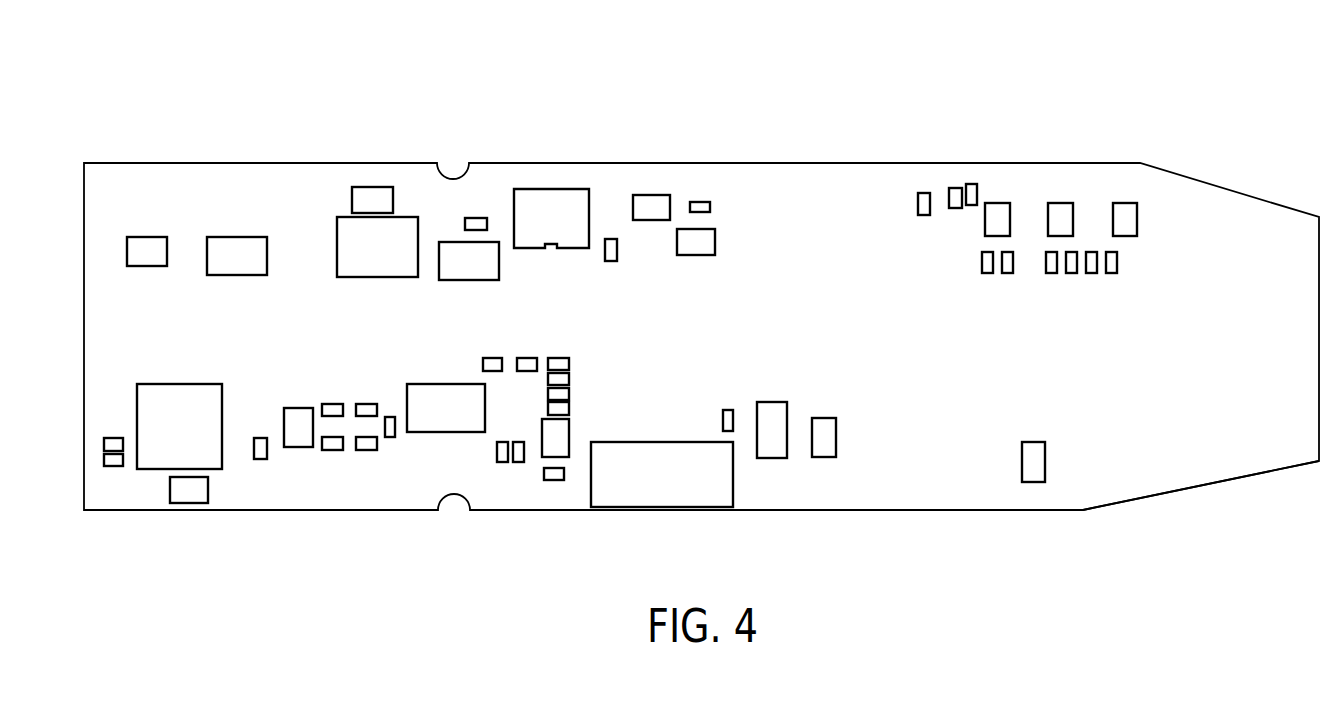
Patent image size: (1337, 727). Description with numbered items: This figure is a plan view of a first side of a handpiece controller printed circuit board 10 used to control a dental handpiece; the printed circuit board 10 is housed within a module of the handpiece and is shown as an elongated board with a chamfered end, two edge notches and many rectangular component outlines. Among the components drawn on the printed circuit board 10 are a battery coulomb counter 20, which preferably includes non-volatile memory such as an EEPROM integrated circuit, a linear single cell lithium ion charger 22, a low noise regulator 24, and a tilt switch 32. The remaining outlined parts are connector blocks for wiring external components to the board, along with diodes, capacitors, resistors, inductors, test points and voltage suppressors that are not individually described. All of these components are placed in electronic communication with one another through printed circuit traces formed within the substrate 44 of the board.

The handpiece controller printed circuit board 10 is at (936, 114).
The battery coulomb counter 20 is at (423, 418).
The linear single cell lithium ion charger 22 is at (572, 205).
The low noise regulator 24 is at (769, 448).
The tilt switch 32 is at (633, 489).
The substrate 44 is at (1097, 508).